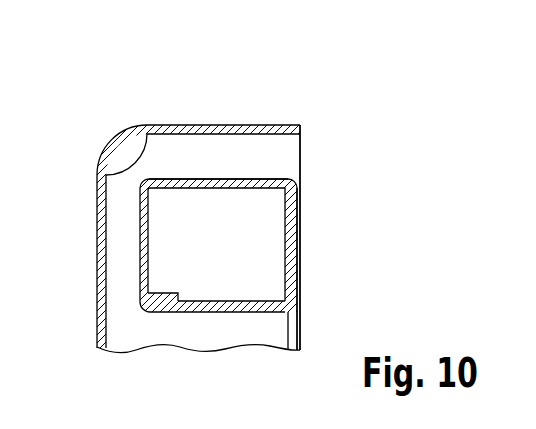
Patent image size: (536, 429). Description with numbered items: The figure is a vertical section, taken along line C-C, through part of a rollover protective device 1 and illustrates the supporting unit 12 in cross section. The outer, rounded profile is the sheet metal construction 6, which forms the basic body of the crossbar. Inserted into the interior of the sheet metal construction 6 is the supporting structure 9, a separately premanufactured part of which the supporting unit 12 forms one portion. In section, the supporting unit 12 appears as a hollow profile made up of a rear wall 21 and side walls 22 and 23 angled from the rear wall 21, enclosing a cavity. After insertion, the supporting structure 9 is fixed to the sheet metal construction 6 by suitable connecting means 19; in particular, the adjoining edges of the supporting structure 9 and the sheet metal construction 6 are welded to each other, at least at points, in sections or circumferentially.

The rollover protective device 1 is at (311, 108).
The sheet metal construction 6 is at (137, 125).
The supporting structure 9 is at (138, 242).
The supporting unit 12 is at (264, 178).
The connecting means 19 is at (145, 312).
The rear wall 21 is at (300, 250).
The side wall 22 is at (214, 312).
The side wall 23 is at (220, 184).